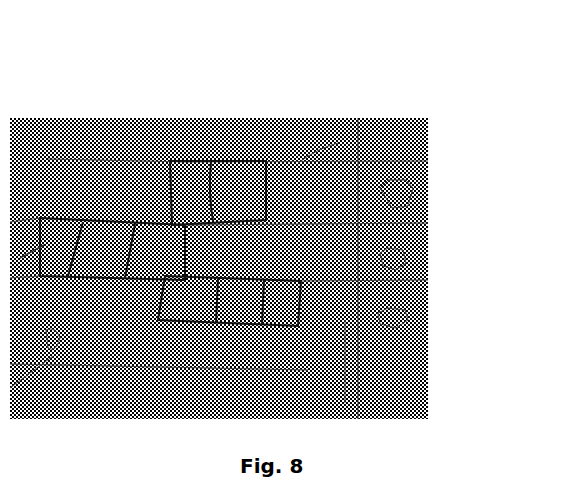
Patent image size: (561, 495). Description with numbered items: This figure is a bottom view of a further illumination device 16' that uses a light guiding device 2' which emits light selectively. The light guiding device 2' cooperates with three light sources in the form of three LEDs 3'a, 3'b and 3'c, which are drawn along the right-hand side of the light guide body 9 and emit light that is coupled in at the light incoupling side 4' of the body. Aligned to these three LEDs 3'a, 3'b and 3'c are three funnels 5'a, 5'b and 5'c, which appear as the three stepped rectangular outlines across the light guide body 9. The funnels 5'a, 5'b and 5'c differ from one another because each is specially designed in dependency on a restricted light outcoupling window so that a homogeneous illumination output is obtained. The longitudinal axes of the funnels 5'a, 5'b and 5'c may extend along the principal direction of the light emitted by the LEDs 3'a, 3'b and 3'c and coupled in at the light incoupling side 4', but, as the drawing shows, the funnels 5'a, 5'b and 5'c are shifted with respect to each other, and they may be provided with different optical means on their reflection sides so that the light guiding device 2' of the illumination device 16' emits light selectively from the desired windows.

The illumination device 16' is at (219, 213).
The light guiding device 2' is at (219, 221).
The light incoupling side 4' is at (395, 246).
The first funnel 5'a is at (233, 153).
The second funnel 5'b is at (112, 172).
The third funnel 5'c is at (197, 367).
The first LED 3'a is at (441, 180).
The second LED 3'b is at (444, 244).
The third LED 3'c is at (443, 305).
The connection region 9 is at (42, 327).